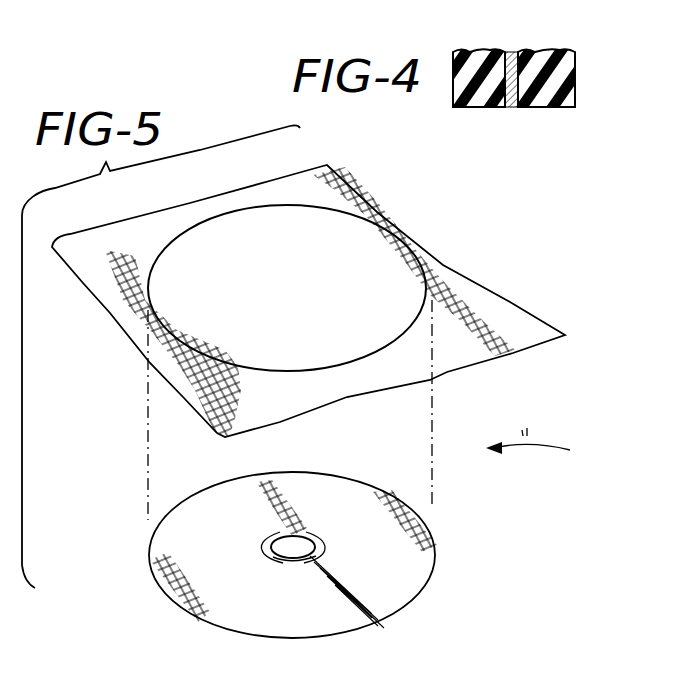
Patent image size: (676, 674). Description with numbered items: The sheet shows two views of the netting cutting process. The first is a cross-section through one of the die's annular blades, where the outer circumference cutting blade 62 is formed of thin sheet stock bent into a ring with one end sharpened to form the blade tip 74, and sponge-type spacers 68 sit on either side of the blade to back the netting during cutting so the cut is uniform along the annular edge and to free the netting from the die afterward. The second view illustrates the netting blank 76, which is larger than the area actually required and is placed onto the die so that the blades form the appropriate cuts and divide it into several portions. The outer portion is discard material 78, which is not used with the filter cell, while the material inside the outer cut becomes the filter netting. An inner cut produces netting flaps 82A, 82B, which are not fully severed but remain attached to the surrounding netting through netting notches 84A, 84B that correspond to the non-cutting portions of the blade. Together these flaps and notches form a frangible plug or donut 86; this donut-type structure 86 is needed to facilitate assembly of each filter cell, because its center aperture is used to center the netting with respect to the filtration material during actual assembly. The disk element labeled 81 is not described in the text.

In FIG. 4, the spacers 68 is at (453, 50).
In FIG. 4, the outer circumference cutting blade 62 is at (512, 50).
In FIG. 4, the blade tip 74 is at (512, 107).
In FIG. 5, the discard material 78 is at (470, 278).
In FIG. 5, the netting blank 76 is at (543, 446).
In FIG. 5, the disk 81 is at (436, 546).
In FIG. 5, the netting flap 82A is at (303, 531).
In FIG. 5, the netting flap 82B is at (297, 562).
In FIG. 5, the netting notch 84A is at (262, 552).
In FIG. 5, the netting notch 84B is at (322, 541).
In FIG. 5, the frangible plug/donut 86 is at (324, 549).